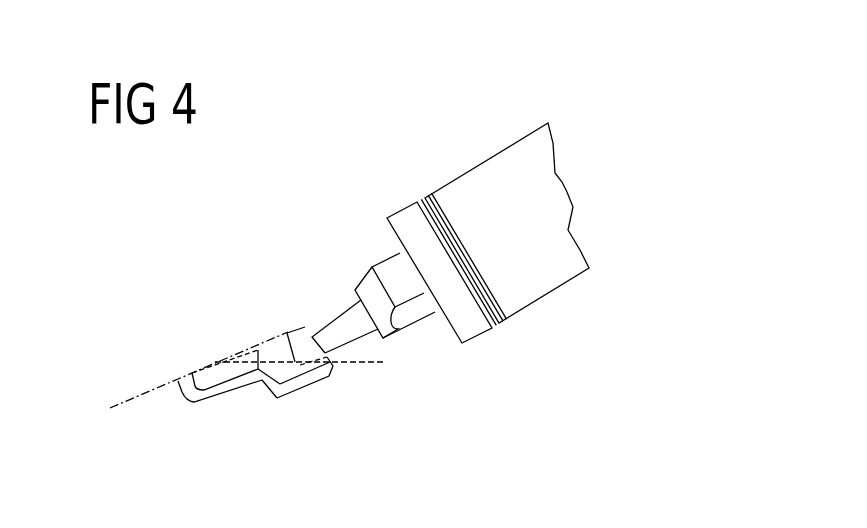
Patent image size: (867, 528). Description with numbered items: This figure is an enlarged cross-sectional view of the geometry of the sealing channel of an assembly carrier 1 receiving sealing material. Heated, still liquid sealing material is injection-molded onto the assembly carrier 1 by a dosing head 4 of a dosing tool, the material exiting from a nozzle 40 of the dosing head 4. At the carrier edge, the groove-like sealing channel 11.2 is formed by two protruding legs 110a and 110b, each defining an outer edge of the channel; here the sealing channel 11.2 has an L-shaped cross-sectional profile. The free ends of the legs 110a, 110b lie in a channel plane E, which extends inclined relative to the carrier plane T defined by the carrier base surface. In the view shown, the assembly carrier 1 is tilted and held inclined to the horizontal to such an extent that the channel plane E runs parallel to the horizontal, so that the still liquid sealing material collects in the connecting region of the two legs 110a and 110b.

The dosing head 4 is at (606, 242).
The nozzle 40 is at (342, 328).
The assembly carrier 1 is at (277, 345).
The first protruding leg 110a is at (258, 369).
The second protruding leg 110b is at (318, 378).
The sealing channel 11.2 is at (279, 395).
The channel plane E is at (309, 364).
The carrier plane T is at (186, 380).